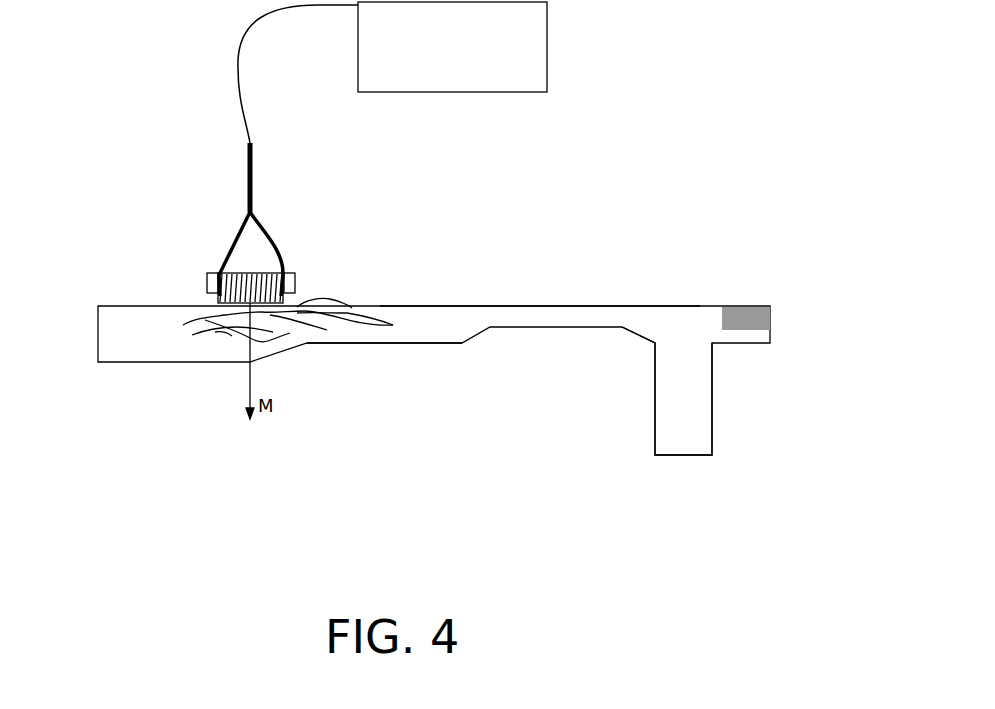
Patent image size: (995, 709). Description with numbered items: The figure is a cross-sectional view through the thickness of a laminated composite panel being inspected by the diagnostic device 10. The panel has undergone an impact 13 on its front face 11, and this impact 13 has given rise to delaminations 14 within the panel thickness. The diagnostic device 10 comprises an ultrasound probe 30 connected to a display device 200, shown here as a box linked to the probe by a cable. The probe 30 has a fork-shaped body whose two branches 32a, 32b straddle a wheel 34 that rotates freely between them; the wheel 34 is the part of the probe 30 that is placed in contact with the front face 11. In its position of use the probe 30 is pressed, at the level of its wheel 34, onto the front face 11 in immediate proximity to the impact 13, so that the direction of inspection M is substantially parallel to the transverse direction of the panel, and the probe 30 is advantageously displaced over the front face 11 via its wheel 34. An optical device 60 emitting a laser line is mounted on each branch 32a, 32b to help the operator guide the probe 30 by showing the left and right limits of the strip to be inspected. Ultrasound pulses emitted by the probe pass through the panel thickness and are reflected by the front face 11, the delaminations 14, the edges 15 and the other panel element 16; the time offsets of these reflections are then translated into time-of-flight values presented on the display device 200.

The diagnostic device 10 is at (145, 130).
The front face 11 is at (433, 306).
The impact 13 is at (325, 297).
The delaminations 14 is at (223, 340).
The edges 15 is at (637, 338).
The panel element (surface) 16 is at (428, 345).
The ultrasound probe 30 is at (240, 154).
The branch 32a is at (233, 230).
The branch 32b is at (268, 227).
The wheel 34 is at (258, 278).
The optical device 60 is at (207, 282).
The display device 200 is at (548, 33).